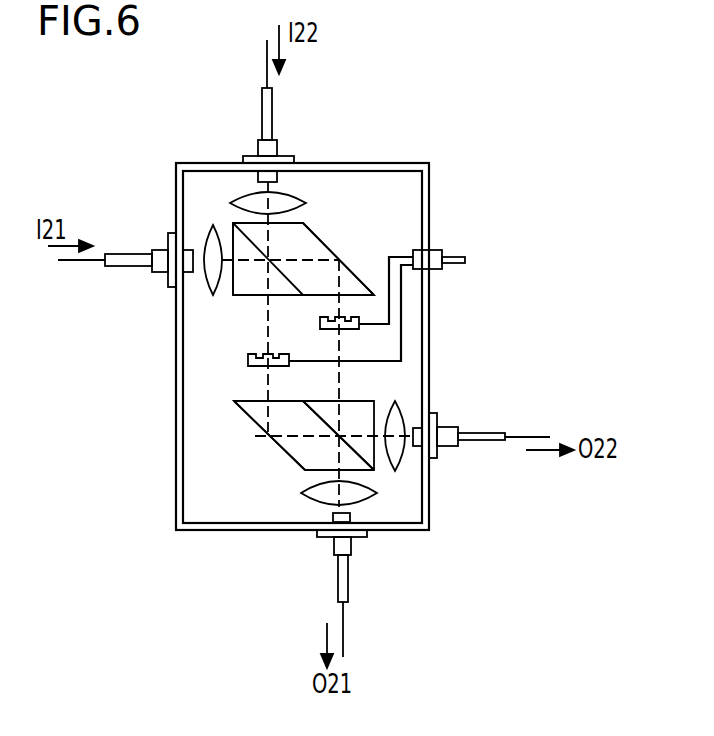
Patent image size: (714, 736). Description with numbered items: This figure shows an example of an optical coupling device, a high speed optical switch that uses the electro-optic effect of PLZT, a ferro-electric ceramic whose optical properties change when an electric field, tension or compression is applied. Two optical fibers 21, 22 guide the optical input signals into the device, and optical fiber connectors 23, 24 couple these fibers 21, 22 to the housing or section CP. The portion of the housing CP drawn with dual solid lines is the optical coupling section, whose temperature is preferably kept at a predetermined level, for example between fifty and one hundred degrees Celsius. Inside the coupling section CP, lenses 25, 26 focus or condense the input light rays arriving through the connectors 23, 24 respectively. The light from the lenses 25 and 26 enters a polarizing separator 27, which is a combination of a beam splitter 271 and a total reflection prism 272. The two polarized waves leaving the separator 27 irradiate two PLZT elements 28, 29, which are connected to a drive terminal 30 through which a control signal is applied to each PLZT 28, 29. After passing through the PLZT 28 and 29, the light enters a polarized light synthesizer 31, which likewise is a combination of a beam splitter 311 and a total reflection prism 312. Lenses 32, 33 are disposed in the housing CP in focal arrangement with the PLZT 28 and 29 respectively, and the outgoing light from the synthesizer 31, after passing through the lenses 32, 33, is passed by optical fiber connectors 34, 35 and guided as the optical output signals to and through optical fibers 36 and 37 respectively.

The optical fiber 21 is at (80, 262).
The optical fiber 22 is at (266, 70).
The optical fiber connector 23 is at (120, 254).
The optical fiber connector 24 is at (262, 116).
The lens 25 is at (205, 245).
The lens 26 is at (248, 196).
The polarizing separator 27 is at (263, 234).
The beam splitter 271 is at (236, 292).
The total reflection prism 272 is at (337, 251).
The PLZT 28 is at (248, 355).
The PLZT 29 is at (350, 318).
The drive terminal 30 is at (459, 252).
The polarized light synthesizer 31 is at (312, 457).
The beam splitter 311 is at (348, 403).
The total reflection prism 312 is at (302, 462).
The lens 32 is at (357, 493).
The lens 33 is at (397, 412).
The optical fiber connector 34 is at (338, 580).
The optical fiber connector 35 is at (477, 433).
The optical fiber 36 is at (345, 632).
The optical fiber 37 is at (520, 437).
The housing or optical coupling section CP is at (176, 438).